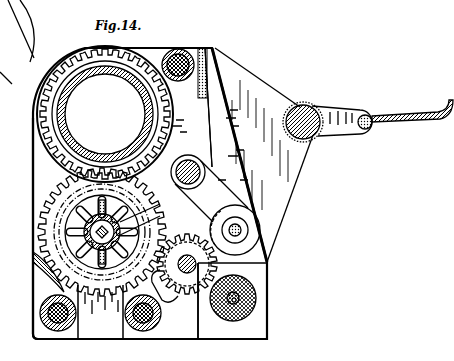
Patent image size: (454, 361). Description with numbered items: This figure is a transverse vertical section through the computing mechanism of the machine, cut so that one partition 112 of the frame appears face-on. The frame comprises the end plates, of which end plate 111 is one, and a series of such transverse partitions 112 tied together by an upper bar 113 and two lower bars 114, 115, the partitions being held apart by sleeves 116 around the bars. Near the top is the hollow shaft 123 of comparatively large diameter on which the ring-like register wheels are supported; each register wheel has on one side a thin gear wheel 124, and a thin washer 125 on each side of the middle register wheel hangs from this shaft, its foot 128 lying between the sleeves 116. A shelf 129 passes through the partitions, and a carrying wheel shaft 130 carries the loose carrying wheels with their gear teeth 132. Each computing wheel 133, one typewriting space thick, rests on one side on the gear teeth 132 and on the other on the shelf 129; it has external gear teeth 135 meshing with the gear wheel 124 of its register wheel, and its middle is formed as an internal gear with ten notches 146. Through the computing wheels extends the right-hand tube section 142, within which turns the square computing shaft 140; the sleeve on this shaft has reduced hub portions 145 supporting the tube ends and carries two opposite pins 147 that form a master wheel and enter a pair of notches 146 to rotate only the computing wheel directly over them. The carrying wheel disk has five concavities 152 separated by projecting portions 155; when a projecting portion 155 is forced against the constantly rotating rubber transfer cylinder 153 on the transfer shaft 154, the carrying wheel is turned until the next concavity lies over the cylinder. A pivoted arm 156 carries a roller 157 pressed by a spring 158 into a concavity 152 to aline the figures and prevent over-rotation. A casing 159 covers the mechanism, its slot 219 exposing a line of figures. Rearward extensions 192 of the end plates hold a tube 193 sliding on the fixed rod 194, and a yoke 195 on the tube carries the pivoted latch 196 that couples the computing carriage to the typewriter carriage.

The end plate 111 is at (282, 88).
The transverse partition 112 is at (210, 114).
The upper bar 113 is at (203, 48).
The lower bar 114 is at (60, 320).
The lower bar 115 is at (150, 330).
The sleeve 116 is at (40, 316).
The hollow shaft 123 is at (92, 118).
The gear wheel 124 is at (33, 126).
The washer 125 is at (174, 176).
The foot 128 is at (101, 313).
The shelf 129 is at (42, 278).
The carrying wheel shaft 130 is at (187, 264).
The gear teeth 132 is at (185, 270).
The computing wheel 133 is at (60, 204).
The gear teeth 135 is at (55, 196).
The computing shaft 140 is at (102, 232).
The tube section 142 is at (152, 208).
The hub portion 145 is at (152, 223).
The notch 146 is at (70, 230).
The pin 147 is at (103, 208).
The concavity 152 is at (166, 300).
The transfer cylinder 153 is at (256, 292).
The transfer shaft 154 is at (240, 302).
The projecting portion 155 is at (196, 315).
The pivoted arm 156 is at (232, 190).
The roller 157 is at (260, 232).
The spring 158 is at (213, 157).
The casing 159 is at (33, 294).
The rearward extension 192 is at (300, 172).
The tube 193 is at (288, 126).
The fixed rod 194 is at (318, 104).
The yoke 195 is at (305, 141).
The latch 196 is at (398, 120).
The slot 219 is at (68, 62).